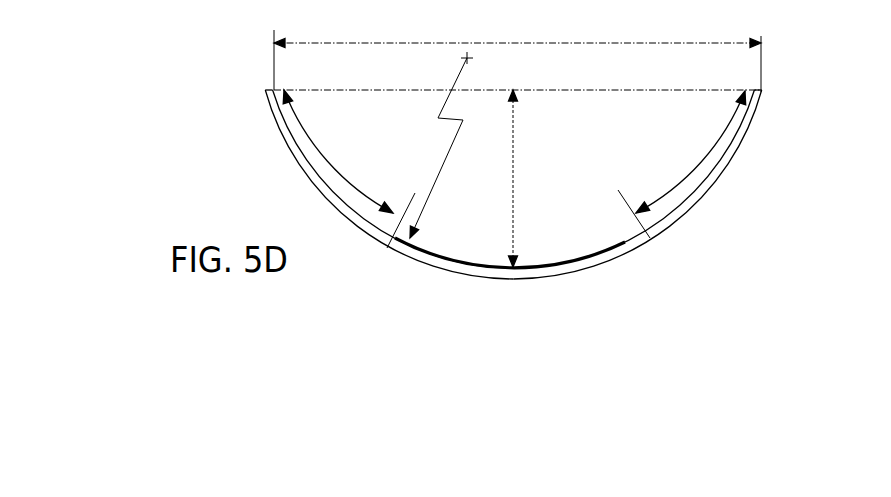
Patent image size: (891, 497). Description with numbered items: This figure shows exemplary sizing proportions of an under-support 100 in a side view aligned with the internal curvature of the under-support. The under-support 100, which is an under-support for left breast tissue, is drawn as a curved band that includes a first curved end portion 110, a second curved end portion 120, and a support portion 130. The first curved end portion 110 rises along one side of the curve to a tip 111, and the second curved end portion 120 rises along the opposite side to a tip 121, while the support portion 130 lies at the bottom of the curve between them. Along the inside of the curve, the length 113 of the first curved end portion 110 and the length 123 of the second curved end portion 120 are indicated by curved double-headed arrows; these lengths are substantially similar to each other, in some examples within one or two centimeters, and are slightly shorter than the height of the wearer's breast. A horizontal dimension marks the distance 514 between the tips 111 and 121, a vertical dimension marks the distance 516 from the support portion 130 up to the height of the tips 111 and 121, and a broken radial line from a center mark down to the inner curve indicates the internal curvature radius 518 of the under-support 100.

The under-support 100 is at (250, 72).
The first curved end portion 110 is at (287, 145).
The tip 111 is at (310, 62).
The length 113 is at (349, 169).
The second curved end portion 120 is at (745, 147).
The tip 121 is at (725, 70).
The length 123 is at (682, 164).
The support portion 130 is at (601, 257).
The distance 514 is at (517, 61).
The distance 516 is at (536, 178).
The internal curvature radius 518 is at (440, 145).